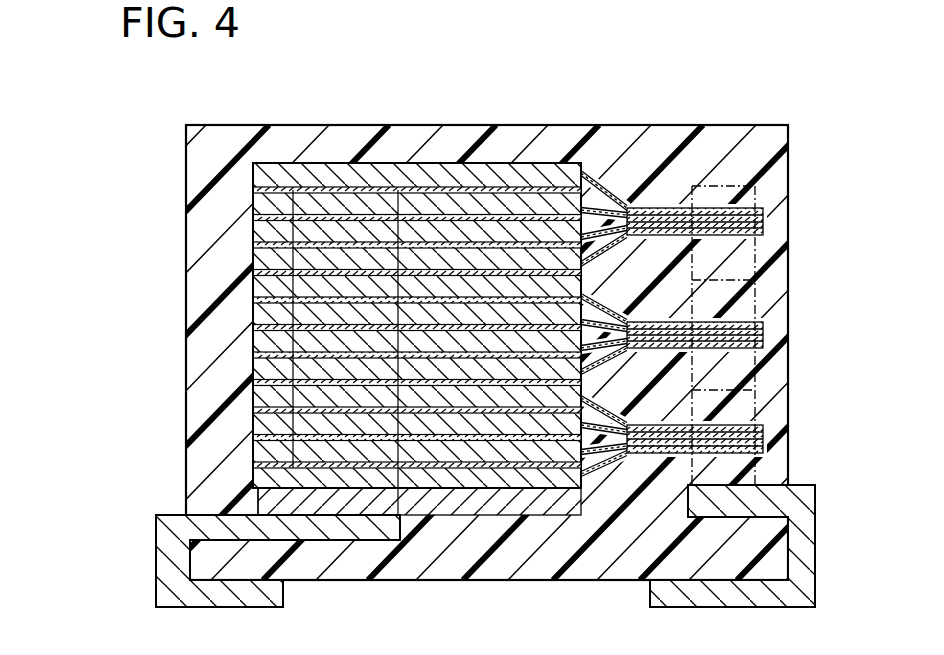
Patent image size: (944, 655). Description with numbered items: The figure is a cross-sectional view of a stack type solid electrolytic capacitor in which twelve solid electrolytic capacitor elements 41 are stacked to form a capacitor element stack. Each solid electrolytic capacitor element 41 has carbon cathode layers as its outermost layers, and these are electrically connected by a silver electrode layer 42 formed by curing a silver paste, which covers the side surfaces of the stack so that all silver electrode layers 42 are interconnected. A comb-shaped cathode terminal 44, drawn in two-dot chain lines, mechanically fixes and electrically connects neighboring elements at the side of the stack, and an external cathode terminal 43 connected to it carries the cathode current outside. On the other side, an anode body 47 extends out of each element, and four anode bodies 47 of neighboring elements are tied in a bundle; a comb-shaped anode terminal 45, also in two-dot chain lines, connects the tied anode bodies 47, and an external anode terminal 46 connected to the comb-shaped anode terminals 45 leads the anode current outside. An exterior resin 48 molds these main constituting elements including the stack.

The solid electrolytic capacitor element 41 is at (440, 178).
The silver electrode layer 42 is at (498, 178).
The external cathode terminal 43 is at (172, 546).
The comb-shaped cathode terminal 44 is at (253, 262).
The comb-shaped anode terminal 45 is at (757, 290).
The external anode terminal 46 is at (802, 516).
The anode body 47 is at (622, 196).
The exterior resin 48 is at (733, 146).